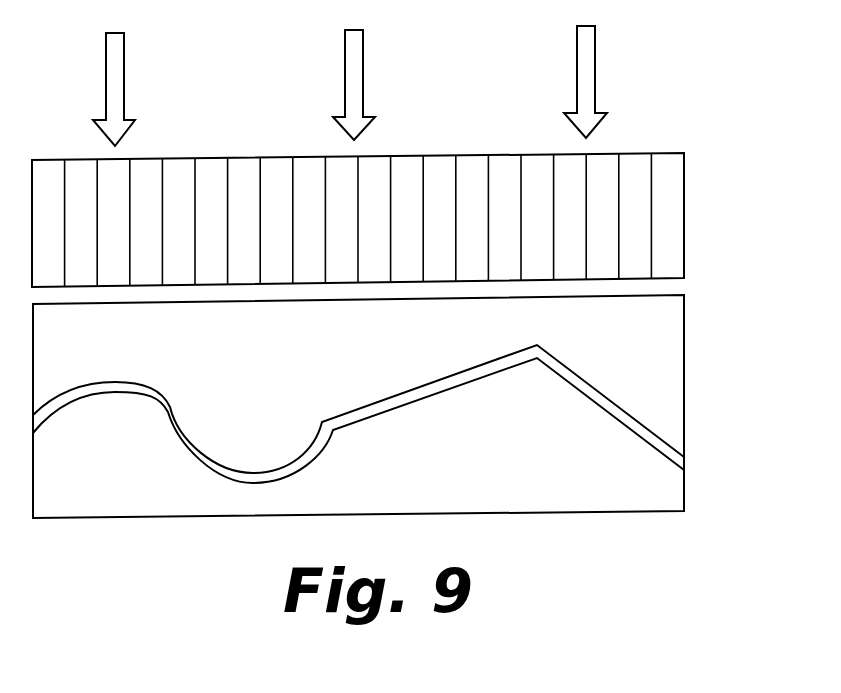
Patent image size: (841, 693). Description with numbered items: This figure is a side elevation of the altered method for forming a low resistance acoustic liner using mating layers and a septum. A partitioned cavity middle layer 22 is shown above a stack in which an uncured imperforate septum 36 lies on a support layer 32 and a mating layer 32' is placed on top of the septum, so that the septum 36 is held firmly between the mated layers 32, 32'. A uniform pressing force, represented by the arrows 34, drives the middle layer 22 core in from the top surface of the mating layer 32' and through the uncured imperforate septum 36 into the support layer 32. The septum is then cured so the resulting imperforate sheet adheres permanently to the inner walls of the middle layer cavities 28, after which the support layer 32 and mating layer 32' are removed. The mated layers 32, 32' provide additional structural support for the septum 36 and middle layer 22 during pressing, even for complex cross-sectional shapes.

The middle layer 22 is at (686, 203).
The middle layer cavities 28 is at (600, 181).
The support layer 32 is at (409, 406).
The mating layer 32' is at (412, 409).
The arrows 34 is at (117, 78).
The uncured imperforate septum 36 is at (678, 463).